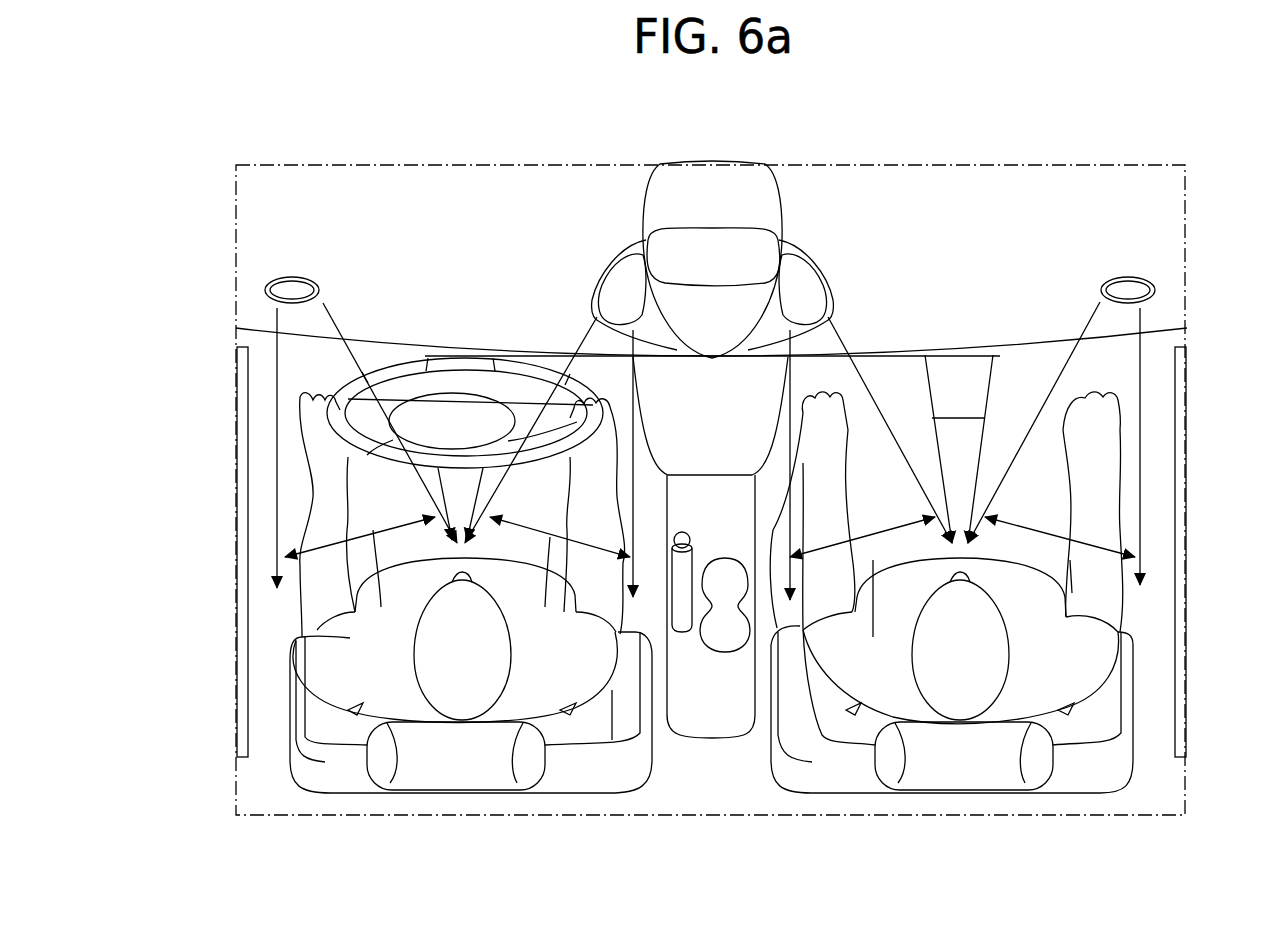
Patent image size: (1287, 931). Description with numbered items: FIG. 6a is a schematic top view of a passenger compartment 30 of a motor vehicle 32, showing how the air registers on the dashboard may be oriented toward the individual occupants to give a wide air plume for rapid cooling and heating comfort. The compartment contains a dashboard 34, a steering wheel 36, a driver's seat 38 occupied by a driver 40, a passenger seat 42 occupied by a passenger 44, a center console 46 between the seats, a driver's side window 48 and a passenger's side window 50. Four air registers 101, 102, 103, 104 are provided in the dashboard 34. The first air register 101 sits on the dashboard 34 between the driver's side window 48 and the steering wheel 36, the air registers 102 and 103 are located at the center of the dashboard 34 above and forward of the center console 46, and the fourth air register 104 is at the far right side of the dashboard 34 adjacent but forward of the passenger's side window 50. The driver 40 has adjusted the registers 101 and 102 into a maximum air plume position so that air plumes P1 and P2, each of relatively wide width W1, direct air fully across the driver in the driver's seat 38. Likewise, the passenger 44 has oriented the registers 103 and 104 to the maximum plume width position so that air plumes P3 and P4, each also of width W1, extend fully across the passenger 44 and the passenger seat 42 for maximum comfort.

The first air register 101 is at (257, 296).
The air register 102 is at (603, 250).
The air register 103 is at (822, 252).
The fourth air register 104 is at (1130, 262).
The passenger compartment 30 is at (985, 215).
The motor vehicle 32 is at (1187, 205).
The dashboard 34 is at (367, 213).
The steering wheel 36 is at (342, 429).
The driver's seat 38 is at (313, 707).
The driver 40 is at (322, 635).
The passenger seat 42 is at (1105, 712).
The passenger 44 is at (1090, 640).
The center console 46 is at (718, 710).
The driver's side window 48 is at (237, 533).
The passenger's side window 50 is at (1187, 460).
The air plume P1 is at (287, 371).
The air plume P2 is at (583, 325).
The air plume P3 is at (830, 343).
The air plume P4 is at (1137, 348).
The width W1 is at (710, 516).